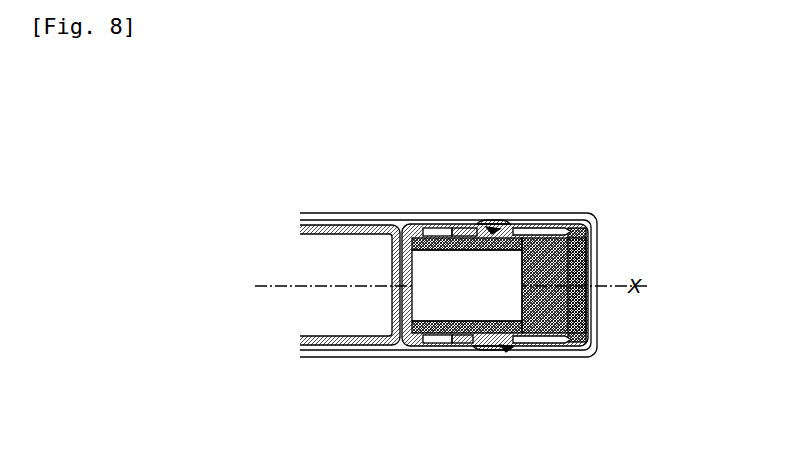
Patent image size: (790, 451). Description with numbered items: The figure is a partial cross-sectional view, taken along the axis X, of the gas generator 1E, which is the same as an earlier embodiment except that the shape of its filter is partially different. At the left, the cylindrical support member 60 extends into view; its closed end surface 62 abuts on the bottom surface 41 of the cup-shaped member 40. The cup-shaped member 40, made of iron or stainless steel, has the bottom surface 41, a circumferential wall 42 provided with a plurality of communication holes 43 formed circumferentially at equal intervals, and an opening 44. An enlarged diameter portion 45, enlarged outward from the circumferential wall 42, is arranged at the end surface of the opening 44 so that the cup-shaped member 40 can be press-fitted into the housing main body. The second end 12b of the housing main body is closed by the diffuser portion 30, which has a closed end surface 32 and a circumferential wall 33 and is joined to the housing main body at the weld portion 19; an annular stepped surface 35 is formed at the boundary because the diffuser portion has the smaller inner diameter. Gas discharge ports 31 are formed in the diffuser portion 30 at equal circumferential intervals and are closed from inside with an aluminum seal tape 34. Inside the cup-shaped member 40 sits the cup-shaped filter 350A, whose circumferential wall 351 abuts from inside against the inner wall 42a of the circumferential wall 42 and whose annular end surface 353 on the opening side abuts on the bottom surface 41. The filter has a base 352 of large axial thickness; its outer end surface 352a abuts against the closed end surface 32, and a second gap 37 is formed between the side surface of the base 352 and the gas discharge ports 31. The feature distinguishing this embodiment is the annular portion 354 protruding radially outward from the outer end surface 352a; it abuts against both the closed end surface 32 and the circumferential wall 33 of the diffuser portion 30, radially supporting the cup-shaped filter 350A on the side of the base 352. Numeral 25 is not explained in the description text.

The gas generator 1E is at (401, 158).
The cylindrical support member 60 is at (350, 247).
The closed end surface 62 is at (397, 298).
The diffuser portion 30 is at (596, 220).
The second gap 37 is at (578, 217).
The cup-shaped member 40 is at (526, 283).
The aluminum seal tape 34 is at (520, 295).
The bottom surface 41 is at (412, 256).
The circumferential wall 42 is at (452, 342).
The inner wall 42a is at (467, 333).
The opening 44 is at (485, 333).
The closed end surface 32 is at (590, 268).
The base 352 is at (592, 300).
The annular portion 354 is at (600, 231).
The outer end surface 352a is at (597, 333).
The spacer 25 is at (430, 227).
The communication holes 43 is at (437, 228).
The enlarged diameter portion 45 is at (488, 226).
The cup-shaped filter 350A is at (500, 221).
The weld portion 19 is at (512, 228).
The gas discharge ports 31 is at (550, 224).
The circumferential wall 33 is at (572, 352).
The second end 12b is at (508, 351).
The annular stepped surface 35 is at (491, 350).
The circumferential wall 351 is at (468, 347).
The annular end surface 353 is at (403, 338).